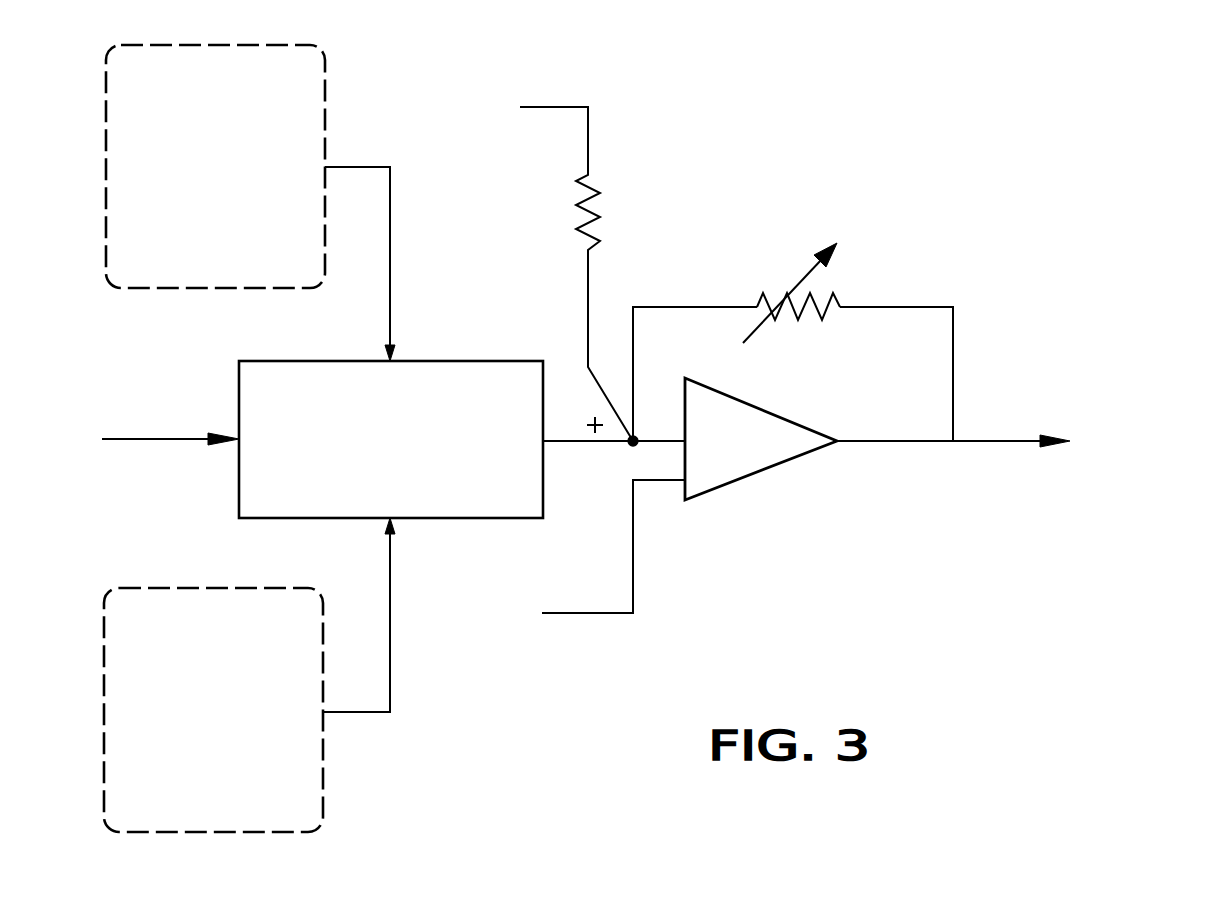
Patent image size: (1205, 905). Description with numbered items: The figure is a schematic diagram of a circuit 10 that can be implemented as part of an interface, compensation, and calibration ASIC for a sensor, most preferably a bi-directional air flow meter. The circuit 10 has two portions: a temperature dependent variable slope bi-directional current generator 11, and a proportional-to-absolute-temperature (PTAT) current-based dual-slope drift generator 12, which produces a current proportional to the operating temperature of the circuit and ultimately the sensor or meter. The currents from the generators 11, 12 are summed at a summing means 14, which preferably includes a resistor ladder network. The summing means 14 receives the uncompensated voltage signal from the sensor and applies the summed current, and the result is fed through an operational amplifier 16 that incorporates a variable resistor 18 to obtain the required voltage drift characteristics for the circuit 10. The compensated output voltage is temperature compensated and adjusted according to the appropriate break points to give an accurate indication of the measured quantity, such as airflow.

The circuit 10 is at (755, 178).
The temperature dependent variable slope bi-directional current generator 11 is at (325, 117).
The proportional-to-absolute-temperature (PTAT) current-based dual-slope drift gener 12 is at (323, 778).
The summing means 14 is at (458, 518).
The operational amplifier 16 is at (748, 477).
The variable resistor 18 is at (840, 300).